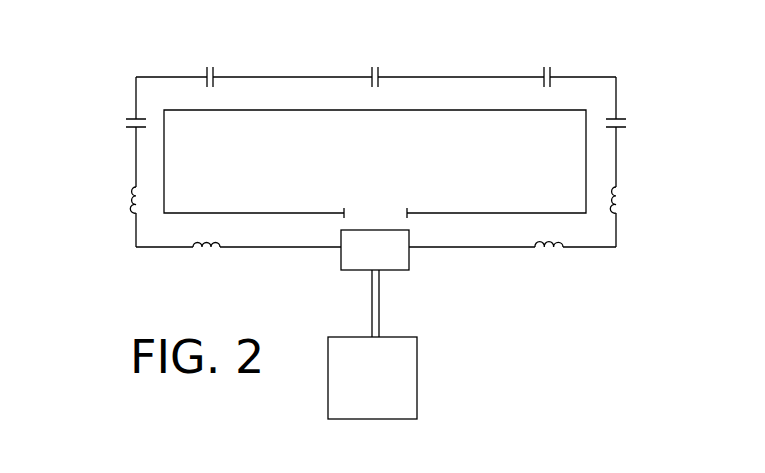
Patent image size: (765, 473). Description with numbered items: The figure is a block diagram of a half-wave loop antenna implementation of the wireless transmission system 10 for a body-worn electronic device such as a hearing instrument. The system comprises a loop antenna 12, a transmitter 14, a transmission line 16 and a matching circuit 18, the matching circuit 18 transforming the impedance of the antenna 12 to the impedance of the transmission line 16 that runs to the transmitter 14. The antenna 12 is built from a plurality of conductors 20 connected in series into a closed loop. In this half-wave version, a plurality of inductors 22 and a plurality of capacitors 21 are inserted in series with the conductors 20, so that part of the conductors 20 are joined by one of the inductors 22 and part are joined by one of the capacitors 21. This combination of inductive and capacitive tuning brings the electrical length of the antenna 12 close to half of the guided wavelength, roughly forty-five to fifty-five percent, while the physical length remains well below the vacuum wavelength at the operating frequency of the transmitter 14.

The wireless transmission system 10 is at (124, 64).
The loop antenna 12 is at (415, 128).
The transmitter 14 is at (402, 367).
The transmission line 16 is at (398, 318).
The matching circuit 18 is at (395, 258).
The conductors 20 is at (463, 76).
The capacitors 21 is at (544, 65).
The inductors 22 is at (622, 193).